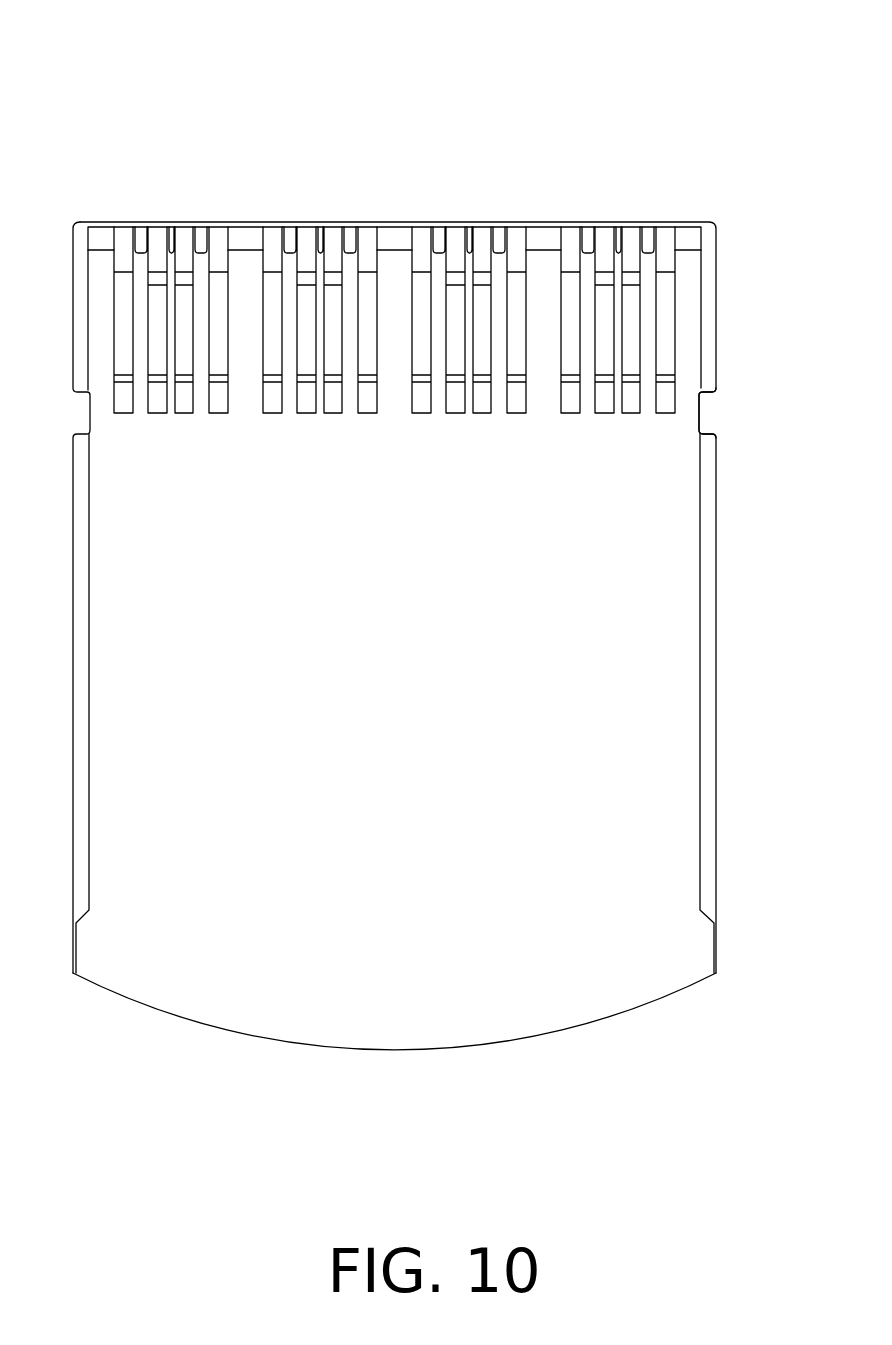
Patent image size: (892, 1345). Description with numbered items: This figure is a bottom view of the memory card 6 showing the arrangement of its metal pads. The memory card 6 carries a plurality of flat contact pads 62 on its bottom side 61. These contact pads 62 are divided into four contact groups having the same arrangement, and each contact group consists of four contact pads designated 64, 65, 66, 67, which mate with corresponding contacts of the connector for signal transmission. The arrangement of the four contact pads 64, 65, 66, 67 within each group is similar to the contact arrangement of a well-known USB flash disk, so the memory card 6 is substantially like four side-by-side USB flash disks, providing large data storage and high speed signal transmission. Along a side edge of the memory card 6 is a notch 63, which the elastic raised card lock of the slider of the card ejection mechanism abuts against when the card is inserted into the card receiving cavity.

The memory card 6 is at (367, 48).
The bottom side 61 is at (590, 762).
The contact pads 62 is at (362, 328).
The notch 63 is at (707, 408).
The contact pad 64 is at (667, 302).
The contact pad 65 is at (630, 305).
The contact pad 66 is at (605, 304).
The contact pad 67 is at (572, 312).